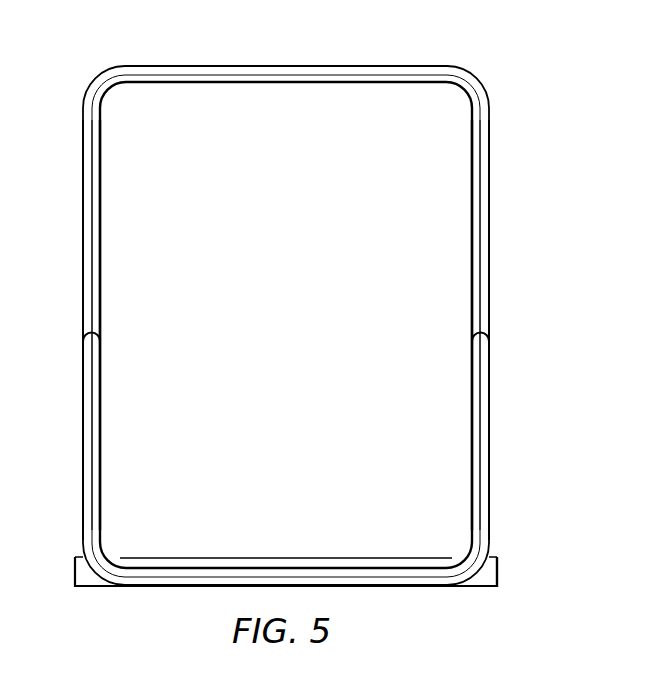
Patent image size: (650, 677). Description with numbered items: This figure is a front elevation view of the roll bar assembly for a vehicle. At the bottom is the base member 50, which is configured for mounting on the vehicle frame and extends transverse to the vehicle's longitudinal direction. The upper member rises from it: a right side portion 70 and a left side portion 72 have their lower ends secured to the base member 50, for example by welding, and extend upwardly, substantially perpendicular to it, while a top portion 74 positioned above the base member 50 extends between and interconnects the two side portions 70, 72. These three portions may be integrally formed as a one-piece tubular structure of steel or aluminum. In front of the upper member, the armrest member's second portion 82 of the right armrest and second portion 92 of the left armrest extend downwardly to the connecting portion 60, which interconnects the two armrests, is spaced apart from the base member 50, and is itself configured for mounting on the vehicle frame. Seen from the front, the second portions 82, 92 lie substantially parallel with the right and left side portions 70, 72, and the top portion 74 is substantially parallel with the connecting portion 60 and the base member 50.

The base member 50 is at (86, 590).
The connecting portion 60 is at (432, 588).
The right side portion 70 is at (82, 254).
The left side portion 72 is at (492, 173).
The top portion 74 is at (373, 65).
The second portion 82 is at (82, 474).
The second portion 92 is at (470, 470).